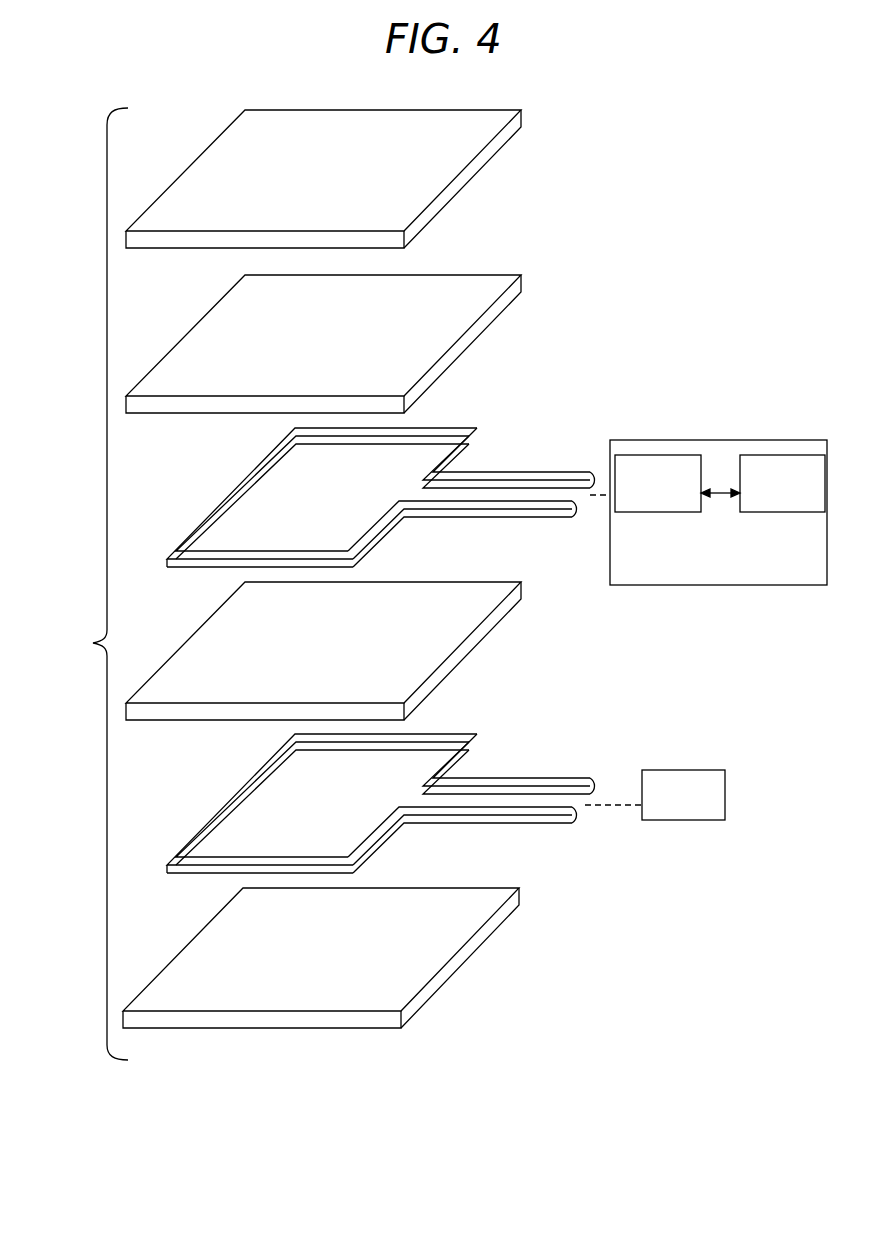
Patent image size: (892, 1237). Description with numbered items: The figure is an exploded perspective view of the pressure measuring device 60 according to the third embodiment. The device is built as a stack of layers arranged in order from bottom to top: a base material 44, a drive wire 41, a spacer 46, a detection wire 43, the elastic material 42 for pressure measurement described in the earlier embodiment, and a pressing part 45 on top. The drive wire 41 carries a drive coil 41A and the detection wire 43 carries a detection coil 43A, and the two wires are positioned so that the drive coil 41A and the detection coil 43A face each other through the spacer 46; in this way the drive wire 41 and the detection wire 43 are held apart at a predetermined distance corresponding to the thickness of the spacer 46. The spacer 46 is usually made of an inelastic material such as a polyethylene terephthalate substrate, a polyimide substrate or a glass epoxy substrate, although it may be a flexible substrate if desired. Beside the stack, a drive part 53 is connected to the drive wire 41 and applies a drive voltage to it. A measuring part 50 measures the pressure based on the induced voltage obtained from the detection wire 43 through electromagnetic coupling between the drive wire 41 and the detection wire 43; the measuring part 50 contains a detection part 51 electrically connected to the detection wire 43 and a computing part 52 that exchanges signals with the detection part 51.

The pressure measuring device 60 is at (93, 643).
The pressing part 45 is at (518, 123).
The elastic material for pressure measurement 42 is at (518, 288).
The detection wire 43 is at (390, 470).
The detection coil 43A is at (450, 423).
The spacer 46 is at (497, 622).
The drive wire 41 is at (395, 784).
The drive coil 41A is at (427, 733).
The base material 44 is at (482, 943).
The measuring part 50 is at (708, 552).
The detection part 51 is at (660, 513).
The computing part 52 is at (780, 513).
The drive part 53 is at (683, 820).